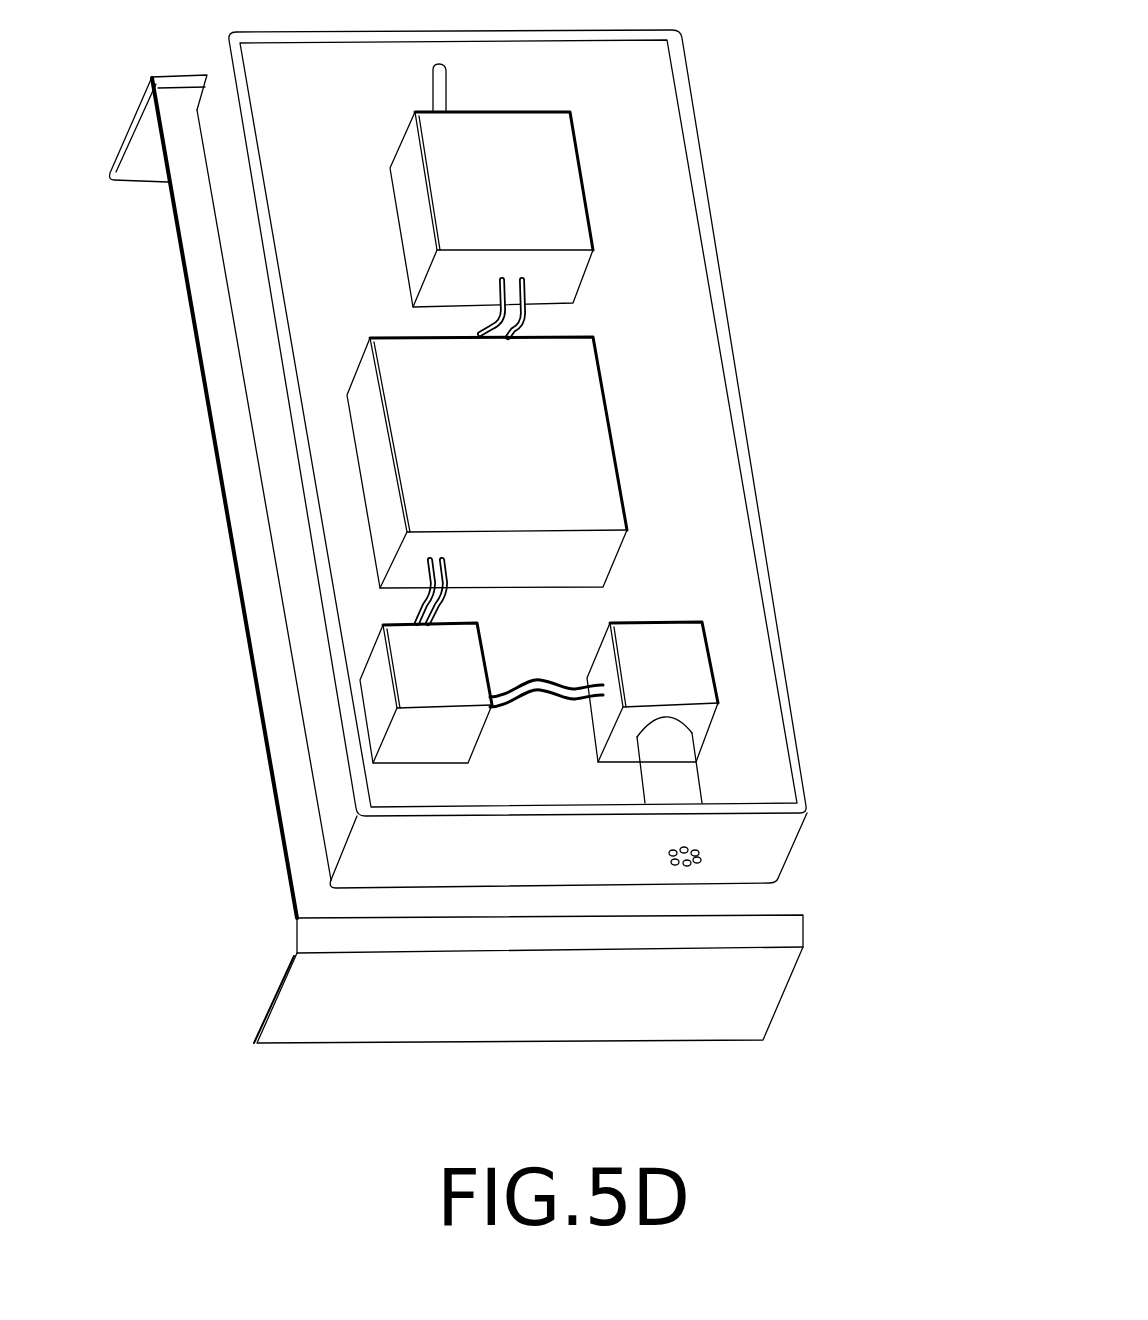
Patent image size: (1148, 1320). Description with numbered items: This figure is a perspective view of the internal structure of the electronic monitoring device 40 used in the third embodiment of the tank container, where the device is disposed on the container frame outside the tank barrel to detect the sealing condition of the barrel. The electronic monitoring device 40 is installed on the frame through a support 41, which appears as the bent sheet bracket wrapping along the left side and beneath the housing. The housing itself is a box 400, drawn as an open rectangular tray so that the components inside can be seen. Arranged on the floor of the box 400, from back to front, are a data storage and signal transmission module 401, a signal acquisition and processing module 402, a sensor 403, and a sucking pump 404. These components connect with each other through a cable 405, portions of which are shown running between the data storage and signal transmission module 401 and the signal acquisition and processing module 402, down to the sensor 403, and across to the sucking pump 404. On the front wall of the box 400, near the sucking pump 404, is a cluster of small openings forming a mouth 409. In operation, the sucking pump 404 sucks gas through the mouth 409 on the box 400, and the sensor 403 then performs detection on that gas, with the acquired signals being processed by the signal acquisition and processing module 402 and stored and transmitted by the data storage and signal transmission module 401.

The electronic monitoring device 40 is at (503, 536).
The support 41 is at (252, 478).
The box 400 is at (571, 459).
The data storage and signal transmission module 401 is at (543, 185).
The signal acquisition and processing module 402 is at (580, 432).
The sensor 403 is at (412, 670).
The sucking pump 404 is at (685, 665).
The cable 405 is at (513, 317).
The mouth 409 is at (700, 852).